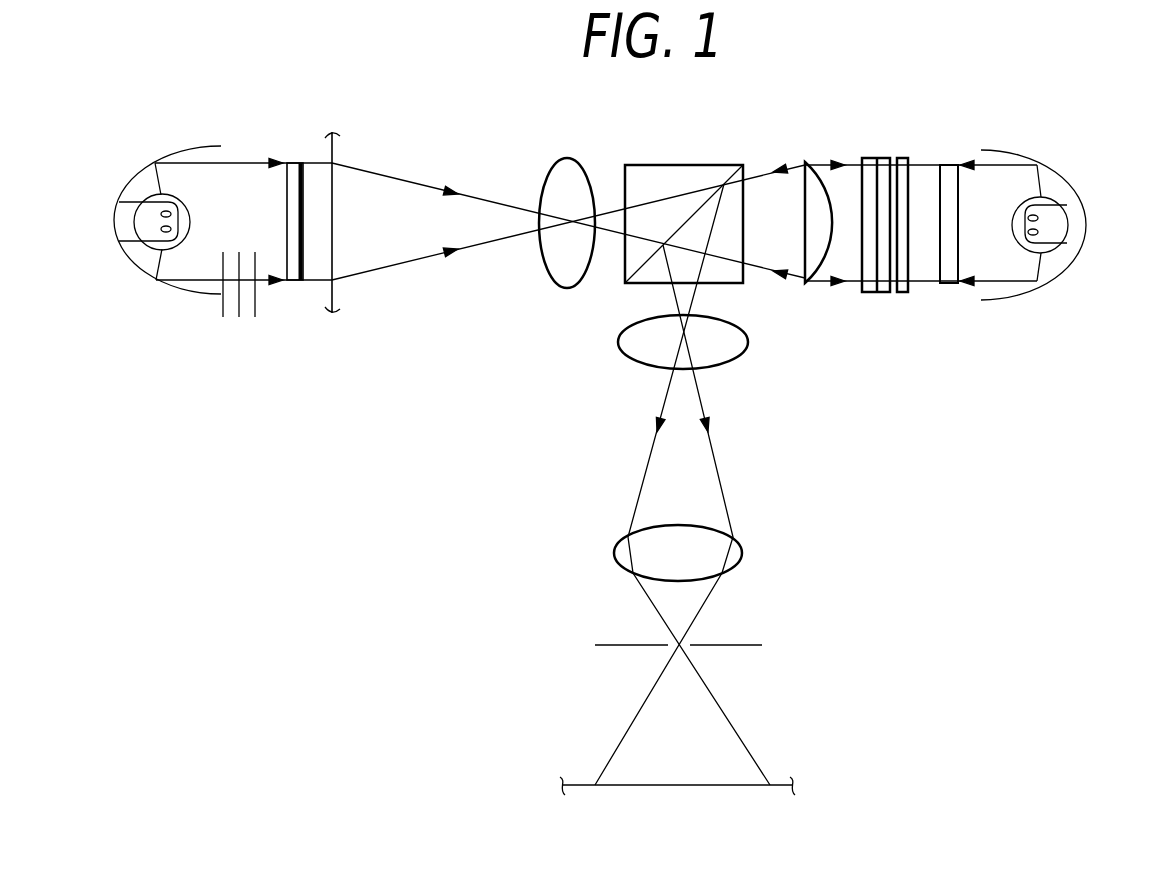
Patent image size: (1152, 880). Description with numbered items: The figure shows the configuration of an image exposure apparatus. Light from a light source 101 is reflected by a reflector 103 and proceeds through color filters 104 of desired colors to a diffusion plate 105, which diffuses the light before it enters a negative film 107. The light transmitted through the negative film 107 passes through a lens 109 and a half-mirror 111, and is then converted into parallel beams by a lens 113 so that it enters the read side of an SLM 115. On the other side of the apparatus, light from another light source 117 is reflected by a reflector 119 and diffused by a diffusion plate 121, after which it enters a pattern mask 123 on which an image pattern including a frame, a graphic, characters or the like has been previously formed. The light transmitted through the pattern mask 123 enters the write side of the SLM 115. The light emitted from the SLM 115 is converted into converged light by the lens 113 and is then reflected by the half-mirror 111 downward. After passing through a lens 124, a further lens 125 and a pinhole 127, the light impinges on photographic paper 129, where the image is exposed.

The light source 101 is at (190, 219).
The reflector 103 is at (197, 146).
The color filters 104 is at (240, 319).
The diffusion plate 105 is at (298, 162).
The negative film 107 is at (337, 157).
The lens 109 is at (572, 157).
The half-mirror 111 is at (675, 163).
The lens 113 is at (810, 161).
The SLM 115 is at (875, 157).
The light source 117 is at (1012, 225).
The reflector 119 is at (1080, 197).
The diffusion plate 121 is at (950, 163).
The pattern mask 123 is at (903, 157).
The lens 124 is at (748, 342).
The lens 125 is at (742, 553).
The pinhole 127 is at (762, 645).
The photographic paper 129 is at (793, 785).